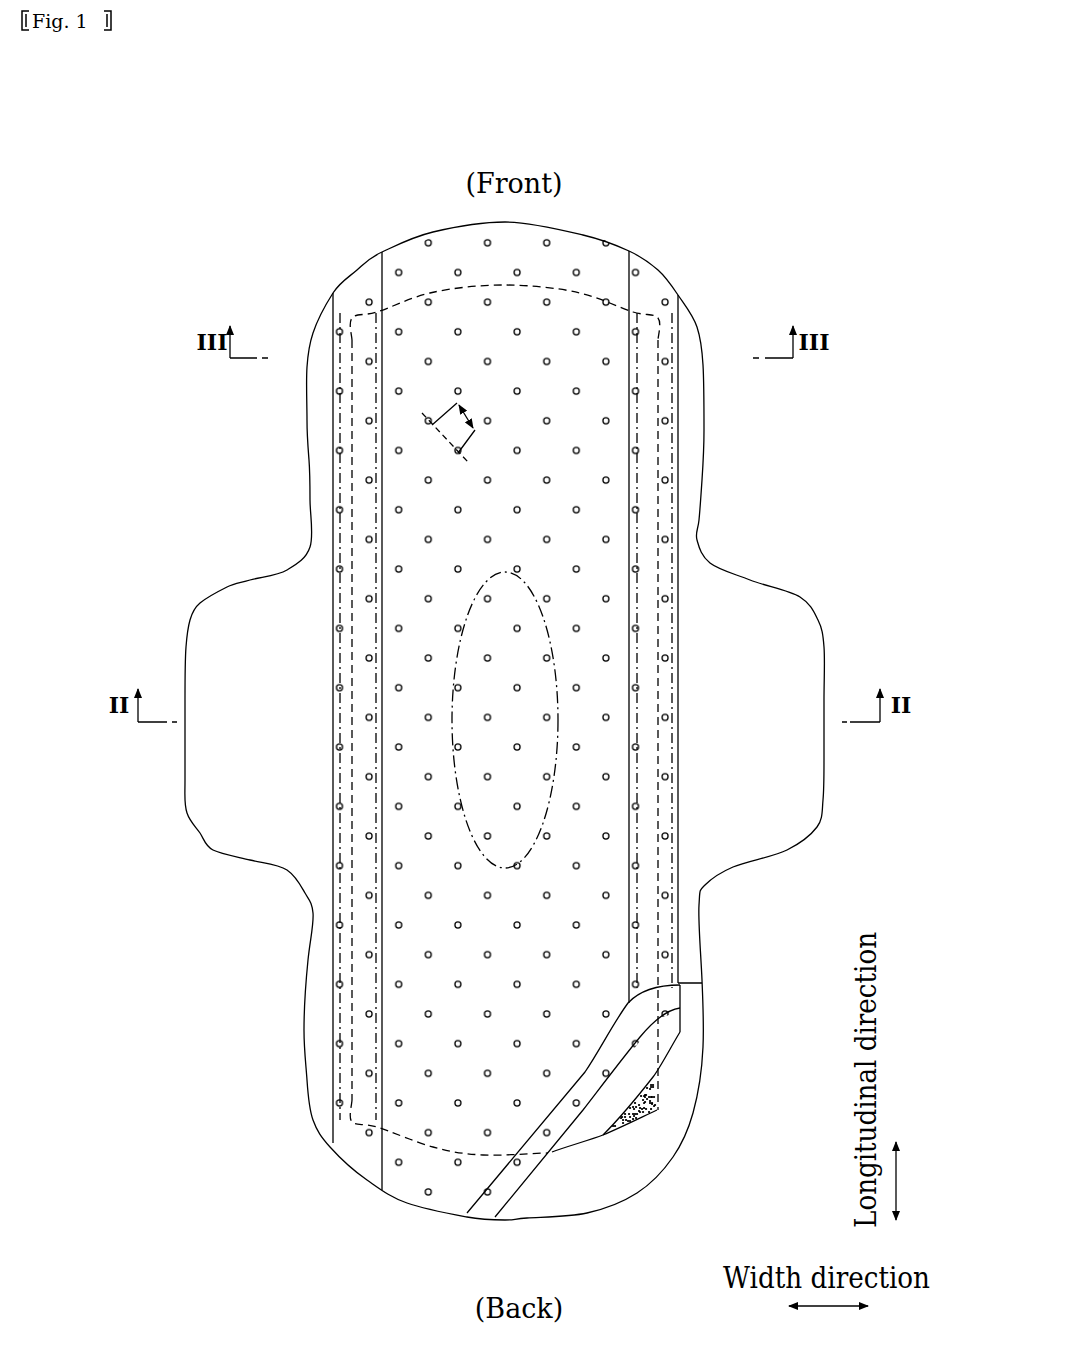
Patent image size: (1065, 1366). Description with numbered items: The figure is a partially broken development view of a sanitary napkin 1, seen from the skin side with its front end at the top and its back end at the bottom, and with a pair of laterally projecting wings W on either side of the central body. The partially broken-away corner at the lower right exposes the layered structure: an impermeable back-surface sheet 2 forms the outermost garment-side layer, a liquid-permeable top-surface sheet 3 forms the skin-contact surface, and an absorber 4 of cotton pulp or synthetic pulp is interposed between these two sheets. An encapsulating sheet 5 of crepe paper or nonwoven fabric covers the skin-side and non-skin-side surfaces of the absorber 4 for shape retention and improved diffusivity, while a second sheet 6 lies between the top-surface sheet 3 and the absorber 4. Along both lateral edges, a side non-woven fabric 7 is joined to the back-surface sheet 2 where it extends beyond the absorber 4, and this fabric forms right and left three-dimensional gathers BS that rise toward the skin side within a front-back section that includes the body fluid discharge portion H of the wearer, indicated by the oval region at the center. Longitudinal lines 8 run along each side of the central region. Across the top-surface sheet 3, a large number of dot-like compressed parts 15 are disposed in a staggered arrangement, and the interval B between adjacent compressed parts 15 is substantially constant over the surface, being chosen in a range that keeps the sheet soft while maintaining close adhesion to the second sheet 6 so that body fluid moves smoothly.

The sanitary napkin 1 is at (673, 270).
The back-surface sheet 2 is at (688, 1049).
The top-surface sheet 3 is at (417, 1182).
The absorber 4 is at (657, 1110).
The encapsulating sheet 5 is at (585, 1130).
The second sheet 6 is at (493, 1200).
The side non-woven fabric 7 is at (322, 1008).
The compressed groove (embossed line) 8 is at (342, 630).
The compressed parts 15 is at (458, 270).
The interval B is at (452, 423).
The body fluid discharge portion H is at (497, 572).
The wing W is at (250, 580).
The three-dimensional gathers BS is at (330, 733).